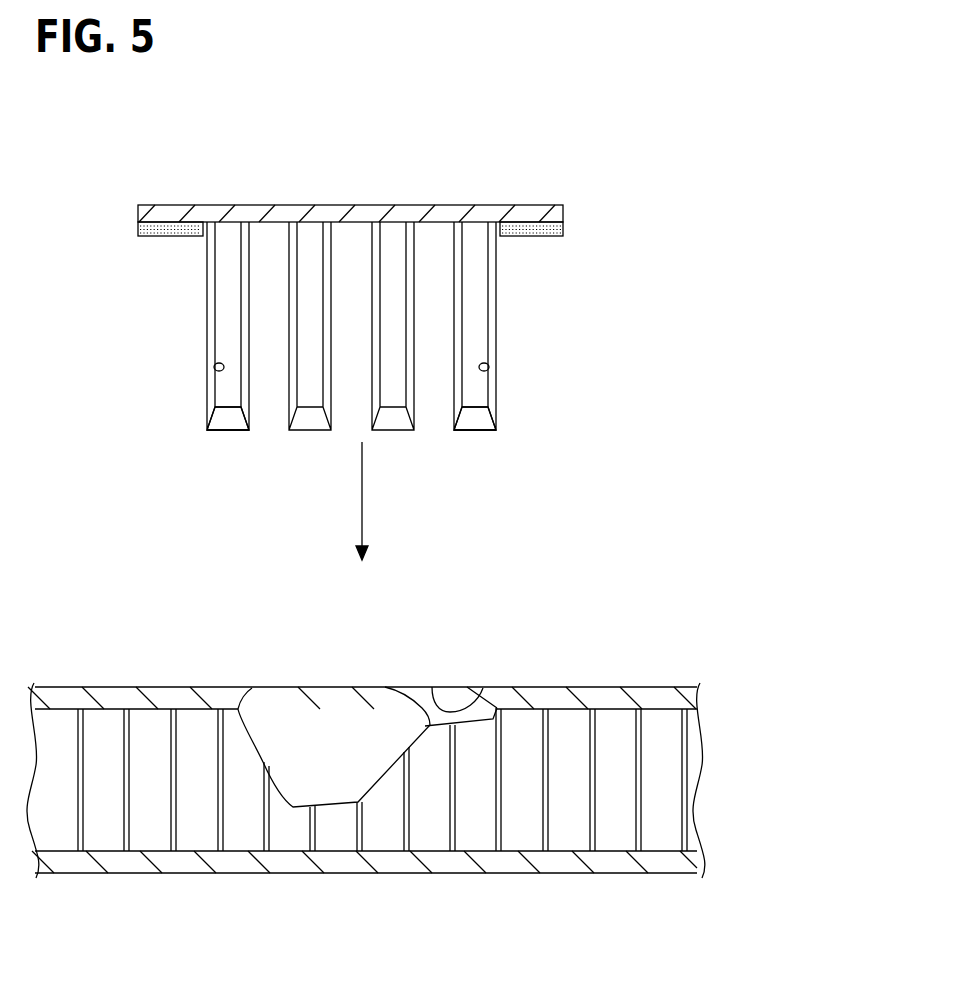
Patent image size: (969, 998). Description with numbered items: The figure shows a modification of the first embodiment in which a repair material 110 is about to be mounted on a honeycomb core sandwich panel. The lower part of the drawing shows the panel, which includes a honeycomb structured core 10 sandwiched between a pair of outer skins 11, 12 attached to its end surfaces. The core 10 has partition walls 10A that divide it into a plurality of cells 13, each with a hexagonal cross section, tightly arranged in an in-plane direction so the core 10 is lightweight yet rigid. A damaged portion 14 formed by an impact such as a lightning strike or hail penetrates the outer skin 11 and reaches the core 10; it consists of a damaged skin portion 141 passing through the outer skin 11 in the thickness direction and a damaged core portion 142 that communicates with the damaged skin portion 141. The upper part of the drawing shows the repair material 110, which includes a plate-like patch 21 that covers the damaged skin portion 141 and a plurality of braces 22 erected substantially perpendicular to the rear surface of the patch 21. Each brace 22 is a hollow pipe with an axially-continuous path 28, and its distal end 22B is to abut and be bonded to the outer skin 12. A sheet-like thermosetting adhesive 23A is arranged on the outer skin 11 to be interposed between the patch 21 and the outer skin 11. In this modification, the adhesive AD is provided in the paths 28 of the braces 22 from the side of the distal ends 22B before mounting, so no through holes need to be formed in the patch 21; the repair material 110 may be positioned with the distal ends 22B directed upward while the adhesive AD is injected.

The repair material 110 is at (446, 126).
The patch 21 is at (497, 205).
The adhesive 23A is at (170, 237).
The brace 22 is at (207, 330).
The distal end 22B is at (207, 410).
The path 28 is at (214, 375).
The adhesive AD is at (228, 432).
The core 10 is at (692, 762).
The outer skin 11 is at (595, 687).
The outer skin 12 is at (648, 873).
The partition wall 10A is at (169, 810).
The cell 13 is at (192, 832).
The damaged portion 14 is at (463, 614).
The damaged core portion 142 is at (377, 687).
The damaged skin portion 141 is at (433, 690).